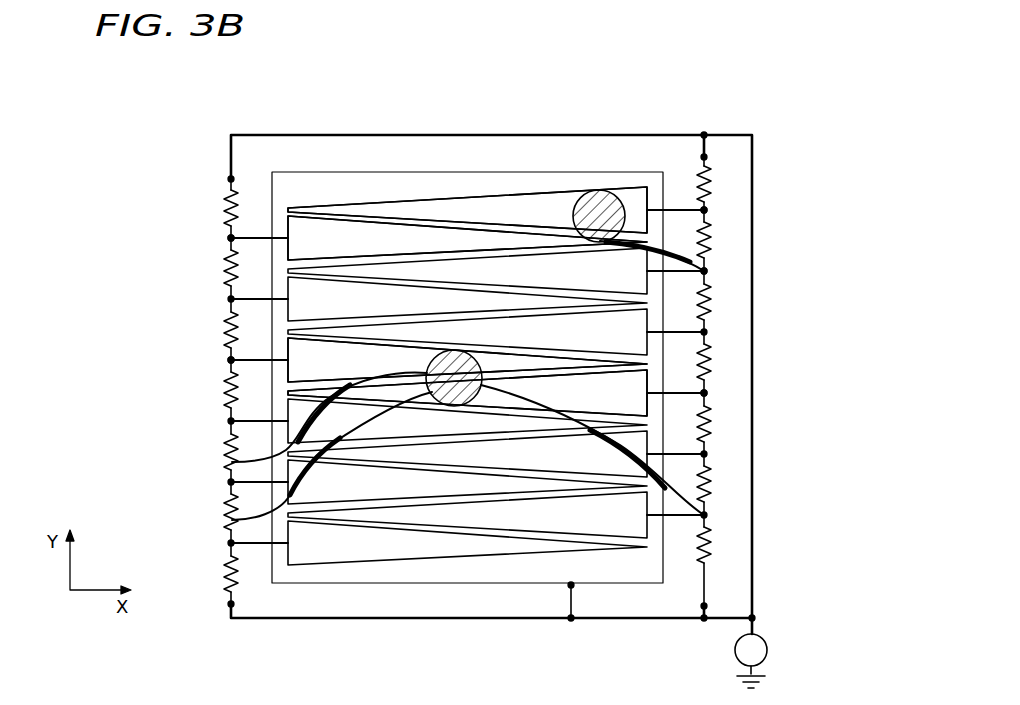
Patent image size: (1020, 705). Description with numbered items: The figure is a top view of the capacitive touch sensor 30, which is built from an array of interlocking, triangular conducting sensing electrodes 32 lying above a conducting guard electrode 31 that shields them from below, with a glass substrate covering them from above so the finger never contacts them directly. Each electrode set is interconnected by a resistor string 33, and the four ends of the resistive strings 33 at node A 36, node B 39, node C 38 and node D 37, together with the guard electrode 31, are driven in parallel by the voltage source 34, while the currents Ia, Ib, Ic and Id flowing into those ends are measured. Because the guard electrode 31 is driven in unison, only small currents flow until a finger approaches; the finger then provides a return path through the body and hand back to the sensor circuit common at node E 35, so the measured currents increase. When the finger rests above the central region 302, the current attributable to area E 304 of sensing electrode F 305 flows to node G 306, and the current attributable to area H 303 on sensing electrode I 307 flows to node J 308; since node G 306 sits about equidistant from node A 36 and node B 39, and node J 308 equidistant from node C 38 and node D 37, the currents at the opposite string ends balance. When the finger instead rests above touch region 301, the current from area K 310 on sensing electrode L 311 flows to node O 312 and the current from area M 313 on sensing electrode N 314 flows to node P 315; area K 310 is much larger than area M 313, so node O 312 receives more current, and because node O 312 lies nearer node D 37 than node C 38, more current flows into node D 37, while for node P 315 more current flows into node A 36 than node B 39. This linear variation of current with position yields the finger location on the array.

The capacitive touch sensor 30 is at (251, 95).
The conducting guard electrode 31 is at (457, 585).
The conducting sensing electrodes 32 is at (470, 395).
The resistive strings 33 is at (786, 312).
The voltage source 34 is at (735, 650).
The node E 35 is at (571, 622).
The node A 36 is at (232, 179).
The node D 37 is at (772, 155).
The node C 38 is at (772, 590).
The node B 39 is at (232, 604).
The touch region 301 is at (655, 132).
The region 302 is at (704, 515).
The area H 303 is at (232, 520).
The area E 304 is at (232, 462).
The sensing electrode F 305 is at (287, 347).
The node G 306 is at (205, 362).
The sensing electrode I 307 is at (645, 412).
The node J 308 is at (730, 388).
The area K 310 is at (612, 213).
The sensing electrode L 311 is at (487, 205).
The node O 312 is at (730, 210).
The area M 313 is at (705, 272).
The sensing electrode N 314 is at (402, 240).
The node P 315 is at (205, 237).